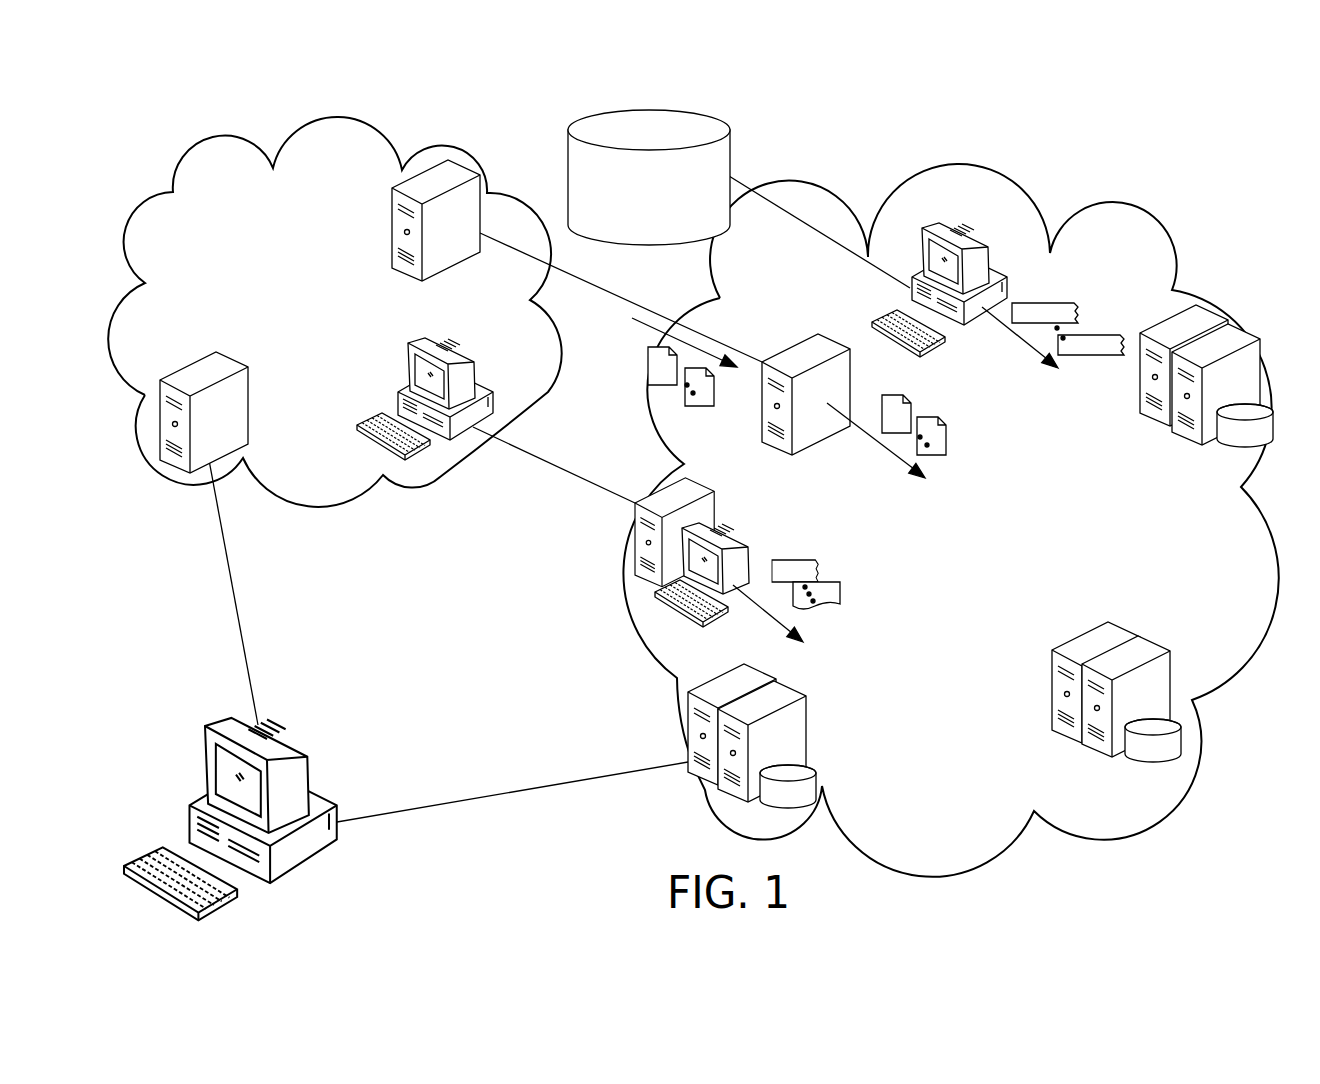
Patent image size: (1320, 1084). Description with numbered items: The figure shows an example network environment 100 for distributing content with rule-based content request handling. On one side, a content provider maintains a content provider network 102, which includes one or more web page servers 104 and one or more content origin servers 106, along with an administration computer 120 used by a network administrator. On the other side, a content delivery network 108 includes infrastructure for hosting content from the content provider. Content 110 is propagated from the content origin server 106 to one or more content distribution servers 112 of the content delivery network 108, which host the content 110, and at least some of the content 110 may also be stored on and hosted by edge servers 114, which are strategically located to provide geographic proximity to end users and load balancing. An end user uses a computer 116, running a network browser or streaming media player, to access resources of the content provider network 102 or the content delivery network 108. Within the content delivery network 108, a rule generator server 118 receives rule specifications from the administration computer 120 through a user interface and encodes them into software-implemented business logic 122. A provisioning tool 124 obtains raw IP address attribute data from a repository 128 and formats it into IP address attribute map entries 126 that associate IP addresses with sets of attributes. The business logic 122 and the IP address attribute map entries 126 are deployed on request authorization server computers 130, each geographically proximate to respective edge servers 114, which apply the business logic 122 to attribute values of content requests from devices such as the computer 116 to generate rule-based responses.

The network environment 100 is at (1099, 146).
The content provider network 102 is at (218, 266).
The web page server 104 is at (210, 357).
The content origin server 106 is at (458, 172).
The content delivery network 108 is at (969, 866).
The content 110 is at (650, 366).
The content distribution server 112 is at (806, 345).
The edge server 114 is at (1178, 303).
The computer 116 is at (285, 735).
The rule generator server 118 is at (715, 517).
The administration computer 120 is at (462, 347).
The business logic 122 is at (797, 560).
The provisioning tool 124 is at (948, 225).
The IP address attribute map entries 126 is at (1057, 303).
The repository 128 is at (667, 233).
The request authorization server computer 130 is at (1237, 330).